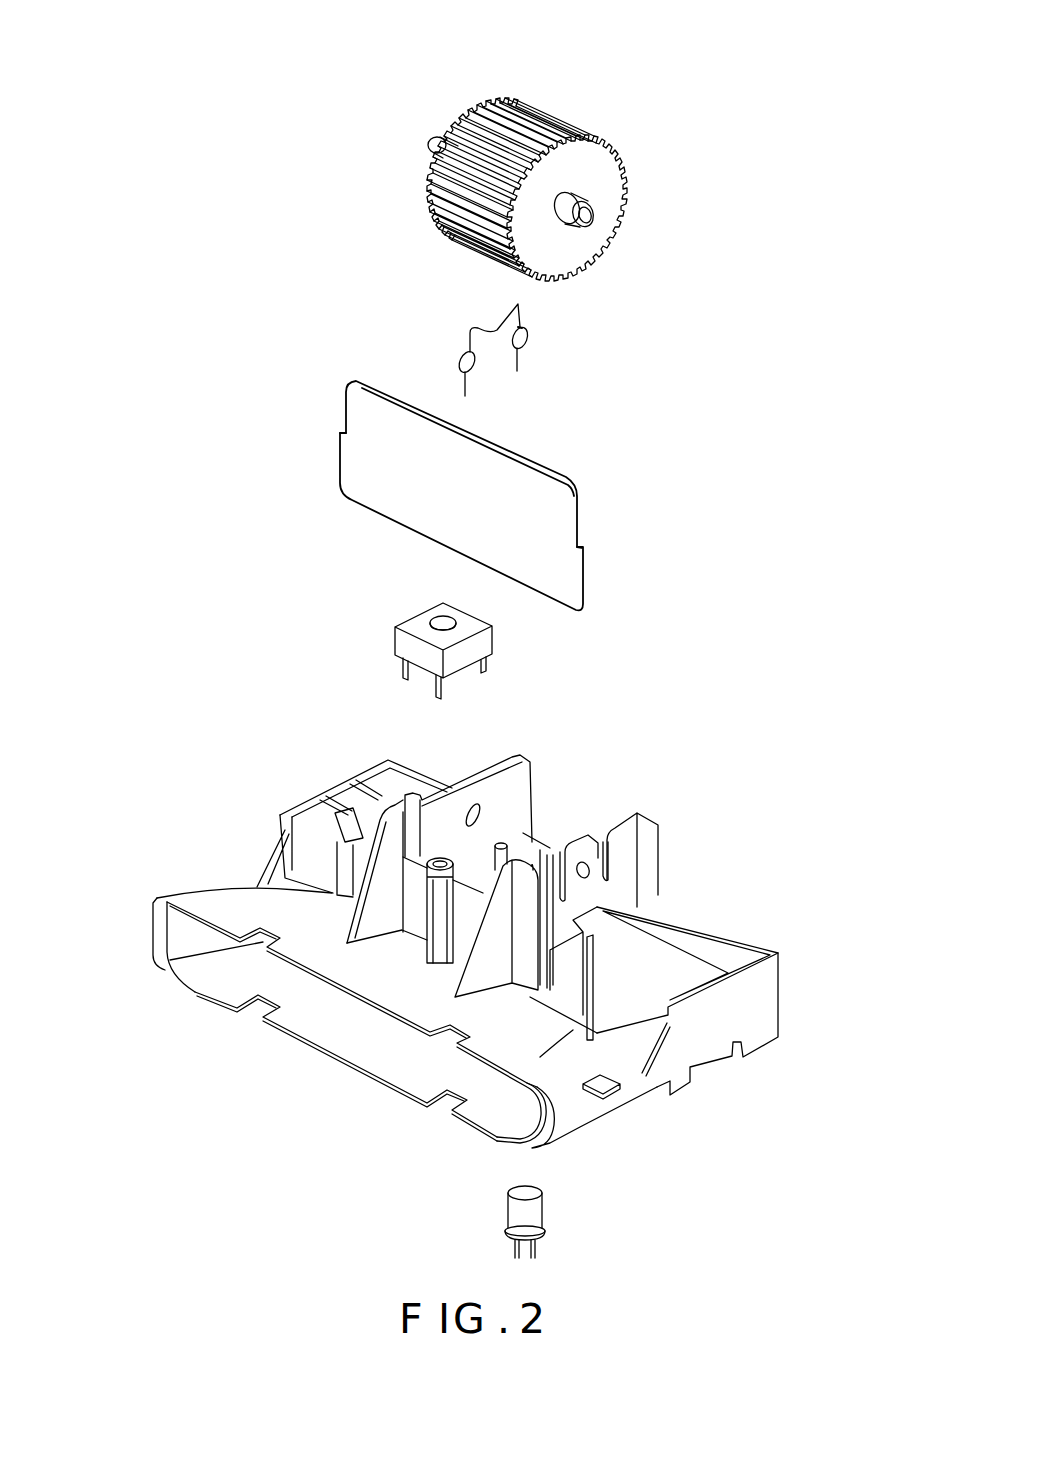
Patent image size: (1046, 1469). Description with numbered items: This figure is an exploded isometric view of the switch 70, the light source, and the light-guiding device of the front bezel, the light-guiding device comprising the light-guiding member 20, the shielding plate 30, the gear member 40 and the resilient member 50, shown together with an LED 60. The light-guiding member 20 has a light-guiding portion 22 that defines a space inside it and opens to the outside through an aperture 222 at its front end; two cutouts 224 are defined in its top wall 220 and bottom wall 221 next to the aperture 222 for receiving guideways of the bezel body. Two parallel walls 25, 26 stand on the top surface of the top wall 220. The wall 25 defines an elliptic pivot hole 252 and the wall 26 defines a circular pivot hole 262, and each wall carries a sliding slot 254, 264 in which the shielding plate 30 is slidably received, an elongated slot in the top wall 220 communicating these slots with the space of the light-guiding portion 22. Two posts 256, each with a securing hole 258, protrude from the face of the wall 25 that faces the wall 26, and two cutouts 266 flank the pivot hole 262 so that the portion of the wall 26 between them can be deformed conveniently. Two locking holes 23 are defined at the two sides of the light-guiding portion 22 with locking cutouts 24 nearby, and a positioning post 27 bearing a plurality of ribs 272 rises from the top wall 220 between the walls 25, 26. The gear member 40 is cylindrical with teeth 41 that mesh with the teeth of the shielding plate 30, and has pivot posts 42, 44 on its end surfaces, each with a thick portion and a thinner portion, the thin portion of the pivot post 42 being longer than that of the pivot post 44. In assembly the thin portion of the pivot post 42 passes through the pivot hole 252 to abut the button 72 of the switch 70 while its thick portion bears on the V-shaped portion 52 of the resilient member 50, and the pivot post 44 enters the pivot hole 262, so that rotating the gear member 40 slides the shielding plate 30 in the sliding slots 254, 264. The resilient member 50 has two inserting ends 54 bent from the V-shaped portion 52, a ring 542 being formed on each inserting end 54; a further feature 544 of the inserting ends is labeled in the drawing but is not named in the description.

The light-guiding member 20 is at (455, 953).
The light-guiding portion 22 is at (222, 903).
The locking holes 23 is at (610, 1093).
The locking cutouts 24 is at (713, 1058).
The wall 25 is at (488, 845).
The wall 26 is at (664, 911).
The positioning post 27 is at (366, 1003).
The shielding plate 30 is at (340, 381).
The gear member 40 is at (531, 203).
The teeth 41 is at (547, 123).
The pivot post 42 is at (440, 142).
The pivot post 44 is at (586, 208).
The resilient member 50 is at (479, 340).
The V-shaped portion 52 is at (511, 302).
The inserting ends 54 is at (523, 312).
The LED 60 is at (532, 1213).
The switch 70 is at (374, 626).
The button 72 is at (442, 620).
The top wall 220 is at (517, 1057).
The bottom wall 221 is at (428, 1067).
The aperture 222 is at (225, 963).
The cutouts 224 is at (257, 1010).
The pivot hole 252 is at (482, 802).
The sliding slot 254 is at (385, 800).
The posts 256 is at (517, 838).
The securing hole 258 is at (502, 842).
The pivot hole 262 is at (590, 875).
The sliding slot 264 is at (640, 907).
The cutouts 266 is at (610, 858).
The ribs 272 is at (430, 955).
The ring 542 is at (527, 337).
The second leg 544 is at (567, 385).